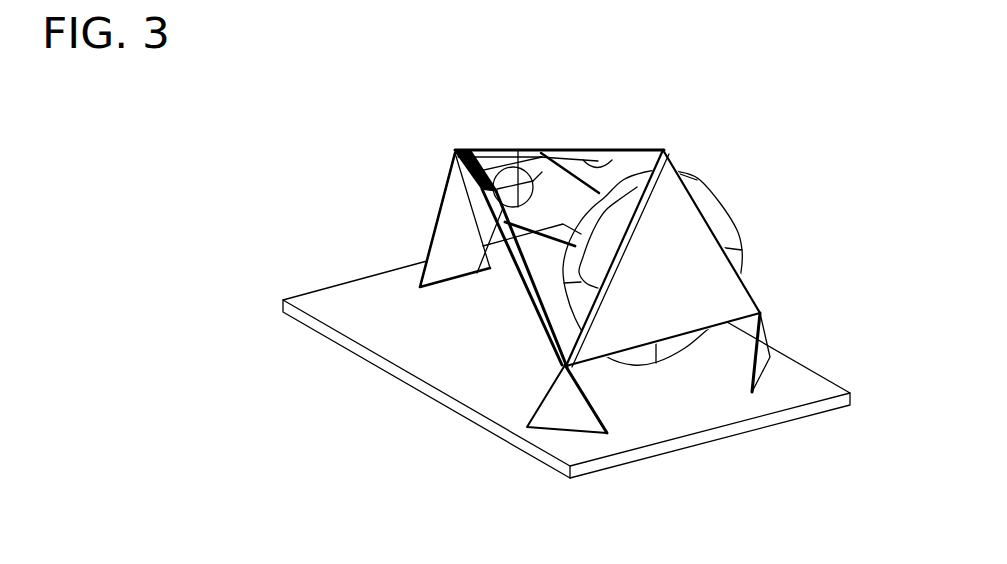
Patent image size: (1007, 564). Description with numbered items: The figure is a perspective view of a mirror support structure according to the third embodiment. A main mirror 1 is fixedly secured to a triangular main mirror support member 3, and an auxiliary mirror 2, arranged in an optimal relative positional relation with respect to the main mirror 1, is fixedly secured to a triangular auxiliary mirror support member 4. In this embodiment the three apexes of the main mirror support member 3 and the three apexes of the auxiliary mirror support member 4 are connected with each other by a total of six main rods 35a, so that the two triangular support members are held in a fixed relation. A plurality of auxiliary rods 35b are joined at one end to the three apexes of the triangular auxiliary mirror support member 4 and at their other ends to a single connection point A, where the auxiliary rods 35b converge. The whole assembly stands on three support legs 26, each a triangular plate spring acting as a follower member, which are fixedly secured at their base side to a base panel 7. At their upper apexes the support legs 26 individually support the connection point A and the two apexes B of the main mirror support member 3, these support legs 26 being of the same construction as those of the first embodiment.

The main mirror 1 is at (645, 148).
The auxiliary mirror 2 is at (523, 173).
The main mirror support member 3 is at (675, 210).
The auxiliary mirror support member 4 is at (503, 150).
The base panel 7 is at (800, 387).
The support legs 26 is at (448, 223).
The main rods 35a is at (558, 150).
The auxiliary rods 35b is at (483, 150).
The connection point A is at (454, 152).
The apexes of the main mirror support member B is at (563, 366).